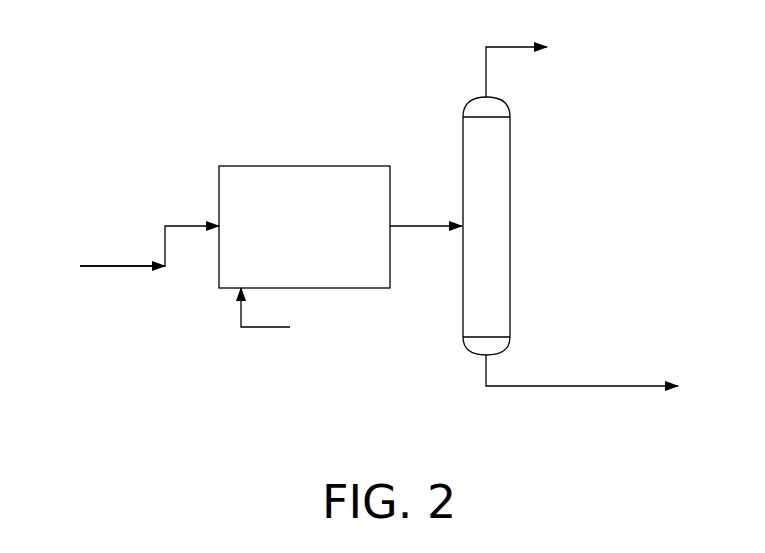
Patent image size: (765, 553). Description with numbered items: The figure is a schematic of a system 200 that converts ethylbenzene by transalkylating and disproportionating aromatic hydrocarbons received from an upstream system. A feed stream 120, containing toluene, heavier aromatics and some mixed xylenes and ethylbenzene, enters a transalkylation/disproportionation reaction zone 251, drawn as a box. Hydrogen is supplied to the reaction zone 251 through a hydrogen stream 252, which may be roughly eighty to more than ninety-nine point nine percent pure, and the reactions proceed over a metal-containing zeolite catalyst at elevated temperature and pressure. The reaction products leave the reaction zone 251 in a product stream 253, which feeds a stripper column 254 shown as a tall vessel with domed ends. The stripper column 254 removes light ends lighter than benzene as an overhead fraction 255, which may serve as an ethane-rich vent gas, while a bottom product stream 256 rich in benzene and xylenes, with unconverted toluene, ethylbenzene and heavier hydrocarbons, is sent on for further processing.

The system 200 is at (157, 56).
The stream 120 is at (122, 262).
The transalkylation/disproportionation reaction zone 251 is at (373, 165).
The hydrogen stream 252 is at (258, 328).
The product stream 253 is at (423, 229).
The stripper column 254 is at (492, 101).
The overhead fraction 255 is at (500, 45).
The bottom product stream 256 is at (500, 389).